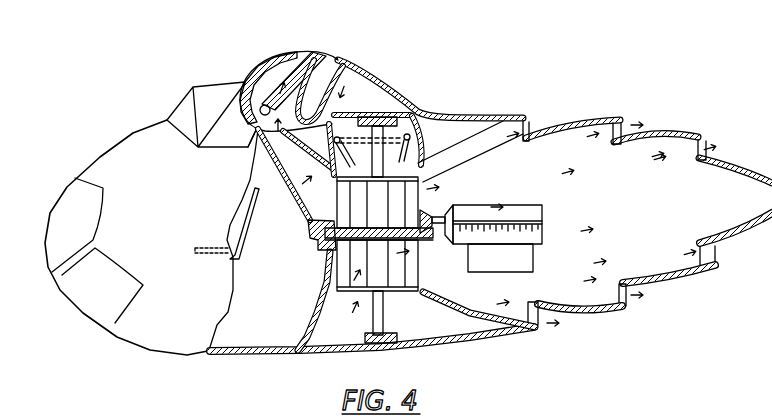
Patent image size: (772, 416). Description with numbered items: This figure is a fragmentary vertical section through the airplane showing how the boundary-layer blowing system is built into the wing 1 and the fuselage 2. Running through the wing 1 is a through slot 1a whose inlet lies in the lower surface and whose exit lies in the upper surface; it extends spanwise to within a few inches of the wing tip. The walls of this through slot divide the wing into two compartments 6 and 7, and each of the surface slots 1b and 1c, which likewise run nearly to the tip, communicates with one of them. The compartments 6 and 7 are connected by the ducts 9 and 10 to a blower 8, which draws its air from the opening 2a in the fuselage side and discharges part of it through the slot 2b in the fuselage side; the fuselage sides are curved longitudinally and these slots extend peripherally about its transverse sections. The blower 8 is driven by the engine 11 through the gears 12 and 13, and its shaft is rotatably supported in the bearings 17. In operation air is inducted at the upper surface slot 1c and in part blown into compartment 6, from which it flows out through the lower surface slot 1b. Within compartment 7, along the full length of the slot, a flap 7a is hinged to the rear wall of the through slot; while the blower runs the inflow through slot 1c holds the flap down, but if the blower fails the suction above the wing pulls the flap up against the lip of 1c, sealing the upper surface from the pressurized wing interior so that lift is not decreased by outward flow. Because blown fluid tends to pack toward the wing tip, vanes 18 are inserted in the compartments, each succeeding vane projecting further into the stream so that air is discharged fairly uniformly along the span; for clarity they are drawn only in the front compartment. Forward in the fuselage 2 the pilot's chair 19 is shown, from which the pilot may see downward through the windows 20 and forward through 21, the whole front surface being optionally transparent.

The wing 1 is at (398, 110).
The through slot 1a is at (311, 72).
The lower surface slot 1b is at (258, 135).
The upper surface slot 1c is at (357, 97).
The fuselage 2 is at (593, 313).
The fuselage opening 2a is at (323, 346).
The fuselage slot 2b is at (530, 120).
The front compartment 6 is at (262, 72).
The rear compartment 7 is at (362, 95).
The flap 7a is at (325, 85).
The blower 8 is at (418, 185).
The duct 9 is at (302, 165).
The duct 10 is at (395, 145).
The engine 11 is at (522, 211).
The gear 12 is at (428, 212).
The gear 13 is at (398, 245).
The bearings 17 is at (388, 335).
The vanes 18 is at (272, 82).
The pilot's chair 19 is at (243, 233).
The windows 20 is at (112, 282).
The front window 21 is at (190, 115).